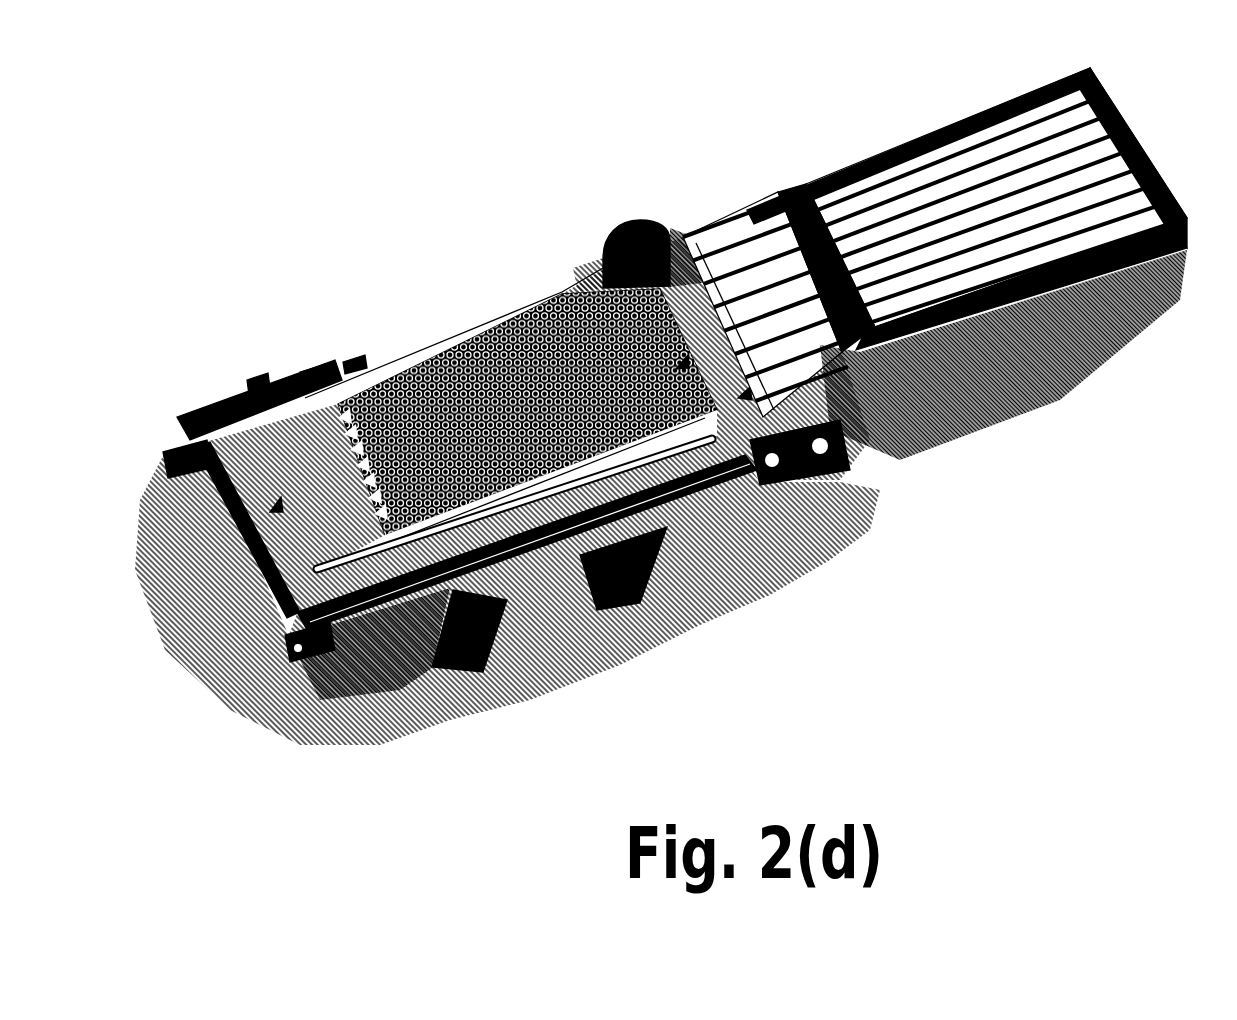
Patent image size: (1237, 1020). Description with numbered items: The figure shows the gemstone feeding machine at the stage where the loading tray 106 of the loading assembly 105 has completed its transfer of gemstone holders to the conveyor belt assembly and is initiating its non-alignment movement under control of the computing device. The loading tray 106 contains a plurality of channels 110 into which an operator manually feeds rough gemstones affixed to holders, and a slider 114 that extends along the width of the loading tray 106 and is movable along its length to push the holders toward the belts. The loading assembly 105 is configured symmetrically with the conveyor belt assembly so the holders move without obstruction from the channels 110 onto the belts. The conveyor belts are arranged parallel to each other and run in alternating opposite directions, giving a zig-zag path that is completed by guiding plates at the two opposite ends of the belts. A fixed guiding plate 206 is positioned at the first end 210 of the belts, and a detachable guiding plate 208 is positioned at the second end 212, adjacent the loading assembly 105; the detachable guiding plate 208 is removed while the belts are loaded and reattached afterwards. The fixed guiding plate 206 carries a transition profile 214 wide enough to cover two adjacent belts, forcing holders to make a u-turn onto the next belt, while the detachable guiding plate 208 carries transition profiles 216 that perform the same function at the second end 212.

The loading tray 106 is at (987, 189).
The slider 114 is at (787, 216).
The second end 212 is at (683, 215).
The first end 210 is at (266, 356).
The channels 110 is at (1042, 287).
The loading assembly 105 is at (1003, 355).
The detachable guiding plate 208 is at (841, 456).
The transition profiles 216 is at (546, 542).
The fixed guiding plate 206 is at (240, 633).
The transition profile 214 is at (514, 581).